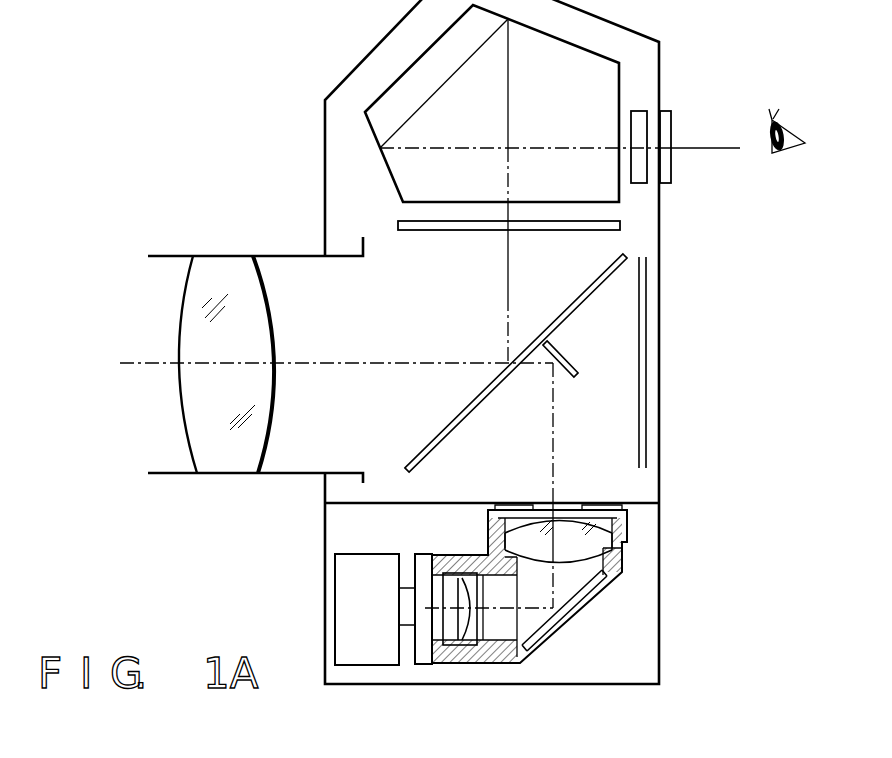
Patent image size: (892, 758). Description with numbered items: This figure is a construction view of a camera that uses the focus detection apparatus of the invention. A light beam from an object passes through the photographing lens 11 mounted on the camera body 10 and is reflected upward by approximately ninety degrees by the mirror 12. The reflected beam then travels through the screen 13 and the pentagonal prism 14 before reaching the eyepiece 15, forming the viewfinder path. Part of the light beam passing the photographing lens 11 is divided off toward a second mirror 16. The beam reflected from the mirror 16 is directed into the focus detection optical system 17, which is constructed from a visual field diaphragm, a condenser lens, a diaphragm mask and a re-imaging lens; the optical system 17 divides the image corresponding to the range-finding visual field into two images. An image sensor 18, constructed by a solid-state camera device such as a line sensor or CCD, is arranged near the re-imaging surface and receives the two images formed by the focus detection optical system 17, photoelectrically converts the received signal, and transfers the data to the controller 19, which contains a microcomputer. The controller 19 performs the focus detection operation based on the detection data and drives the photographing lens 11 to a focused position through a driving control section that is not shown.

The camera body 10 is at (660, 424).
The photographing lens 11 is at (222, 476).
The mirror 12 is at (432, 433).
The screen 13 is at (546, 232).
The pentagonal prism 14 is at (605, 56).
The eyepiece 15 is at (672, 172).
The mirror 16 is at (576, 368).
The focus detection optical system 17 is at (620, 610).
The image sensor 18 is at (426, 554).
The controller 19 is at (364, 554).